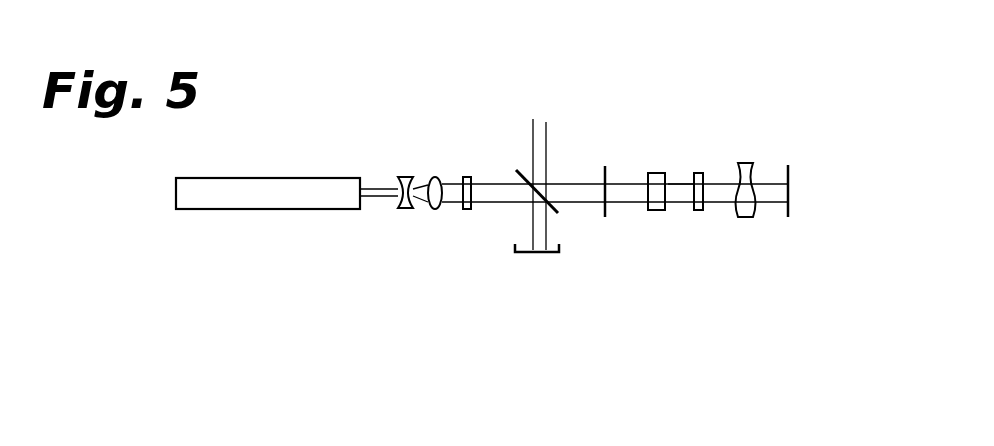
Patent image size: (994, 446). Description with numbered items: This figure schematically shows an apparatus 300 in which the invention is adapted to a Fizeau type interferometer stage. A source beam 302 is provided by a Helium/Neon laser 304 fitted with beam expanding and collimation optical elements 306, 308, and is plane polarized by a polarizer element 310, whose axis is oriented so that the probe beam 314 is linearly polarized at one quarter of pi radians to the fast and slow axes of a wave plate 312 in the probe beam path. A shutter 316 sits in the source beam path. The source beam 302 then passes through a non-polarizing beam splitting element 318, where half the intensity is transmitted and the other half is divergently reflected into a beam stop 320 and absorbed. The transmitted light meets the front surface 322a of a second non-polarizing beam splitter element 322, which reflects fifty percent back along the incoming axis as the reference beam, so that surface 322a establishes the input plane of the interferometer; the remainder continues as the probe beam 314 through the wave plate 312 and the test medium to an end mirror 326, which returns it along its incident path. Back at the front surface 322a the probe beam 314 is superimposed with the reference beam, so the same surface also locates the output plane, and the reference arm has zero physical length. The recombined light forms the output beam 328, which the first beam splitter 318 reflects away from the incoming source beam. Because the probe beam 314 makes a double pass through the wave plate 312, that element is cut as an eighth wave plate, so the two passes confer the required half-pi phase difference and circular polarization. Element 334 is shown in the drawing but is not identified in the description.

The apparatus 300 is at (368, 64).
The source beam 302 is at (493, 203).
The Helium/Neon laser 304 is at (190, 190).
The beam expanding and collimation optical element 306 is at (405, 178).
The beam expanding and collimation optical element 308 is at (437, 210).
The polarizer element 310 is at (467, 177).
The wave plate 312 is at (705, 210).
The probe beam 314 is at (680, 183).
The shutter 316 is at (605, 166).
The non-polarizing beam splitting element 318 is at (560, 207).
The beam stop 320 is at (548, 254).
The second non-polarizing beam splitter element 322 is at (660, 212).
The front surface 322a is at (648, 207).
The end mirror 326 is at (788, 165).
The output beam 328 is at (533, 121).
The diffuser 334 is at (745, 163).